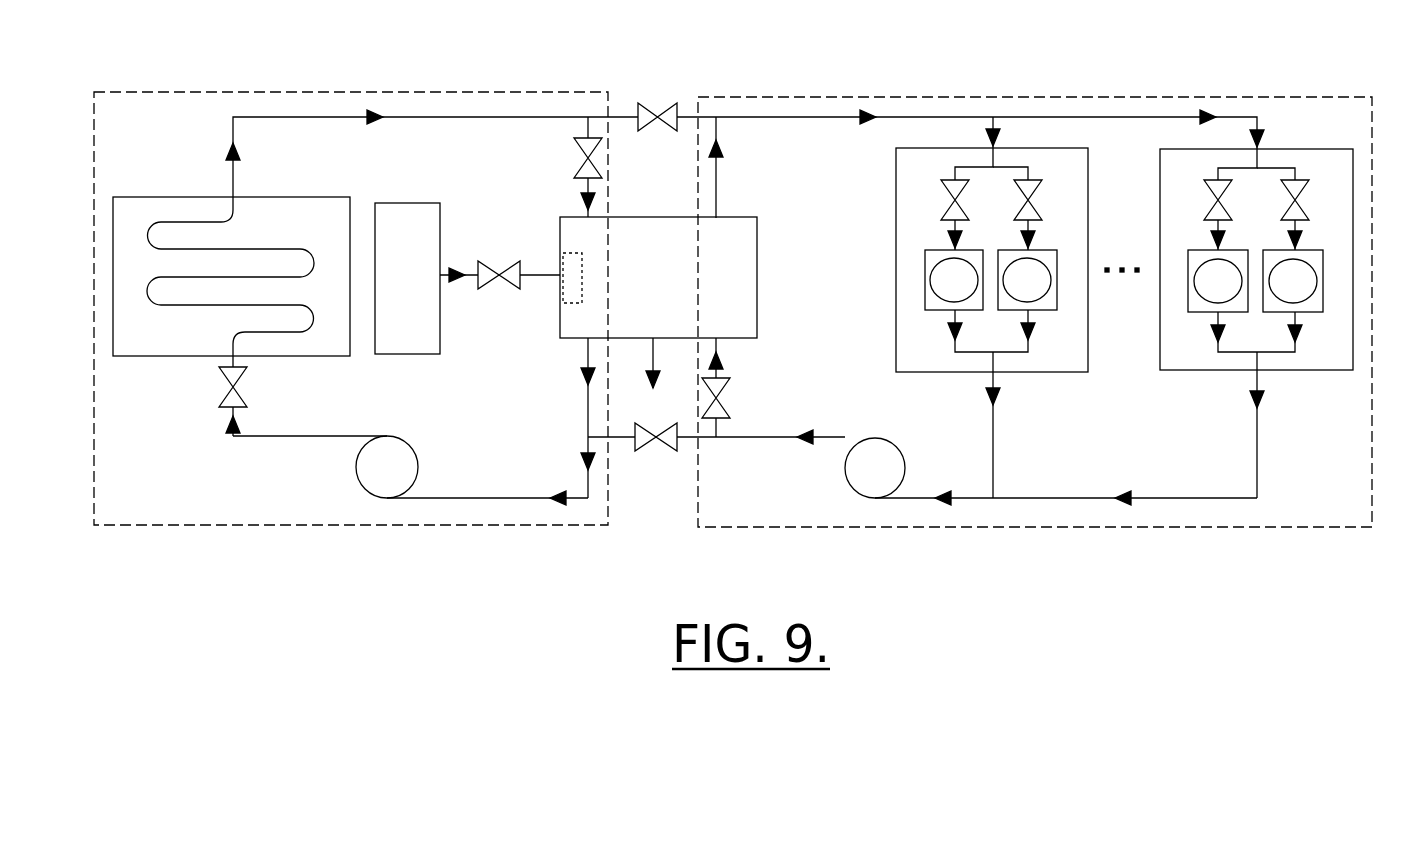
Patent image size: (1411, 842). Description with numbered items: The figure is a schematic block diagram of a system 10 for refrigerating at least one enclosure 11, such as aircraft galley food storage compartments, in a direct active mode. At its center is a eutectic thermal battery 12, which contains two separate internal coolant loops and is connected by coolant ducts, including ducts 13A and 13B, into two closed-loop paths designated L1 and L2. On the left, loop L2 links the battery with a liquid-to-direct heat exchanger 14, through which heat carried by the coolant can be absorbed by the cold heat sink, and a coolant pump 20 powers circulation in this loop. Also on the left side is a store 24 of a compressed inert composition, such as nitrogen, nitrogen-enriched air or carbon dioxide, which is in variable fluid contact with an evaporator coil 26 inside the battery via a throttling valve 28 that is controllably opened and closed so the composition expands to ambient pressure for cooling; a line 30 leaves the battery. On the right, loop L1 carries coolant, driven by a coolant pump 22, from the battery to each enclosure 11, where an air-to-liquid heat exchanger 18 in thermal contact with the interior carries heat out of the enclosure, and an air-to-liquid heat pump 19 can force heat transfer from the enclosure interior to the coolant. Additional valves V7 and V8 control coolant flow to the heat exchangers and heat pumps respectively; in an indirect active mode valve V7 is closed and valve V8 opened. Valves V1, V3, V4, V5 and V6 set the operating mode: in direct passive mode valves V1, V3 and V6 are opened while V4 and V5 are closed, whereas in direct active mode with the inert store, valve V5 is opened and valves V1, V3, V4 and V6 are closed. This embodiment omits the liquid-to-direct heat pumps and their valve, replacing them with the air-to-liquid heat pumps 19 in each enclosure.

The system 10 is at (733, 270).
The enclosure 11 is at (1092, 323).
The eutectic thermal battery 12 is at (685, 254).
The duct 13A is at (432, 127).
The duct 13B is at (970, 138).
The liquid-to-direct heat exchanger 14 is at (231, 259).
The air-to-liquid heat exchanger 18 is at (1055, 286).
The air-to-liquid heat pump 19 is at (1160, 320).
The coolant pump 20 is at (410, 470).
The coolant pump 22 is at (1051, 463).
The store of compressed inert composition 24 is at (411, 258).
The evaporator coil 26 is at (537, 261).
The throttling valve 28 is at (515, 297).
The outlet line 30 is at (639, 376).
The closed-loop path L1 is at (1035, 291).
The closed-loop path L2 is at (351, 290).
The valve V1 is at (261, 401).
The valve V3 is at (694, 88).
The valve V4 is at (555, 167).
The valve V5 is at (751, 387).
The valve V6 is at (740, 455).
The valve V7 is at (1040, 183).
The valve V8 is at (1191, 166).